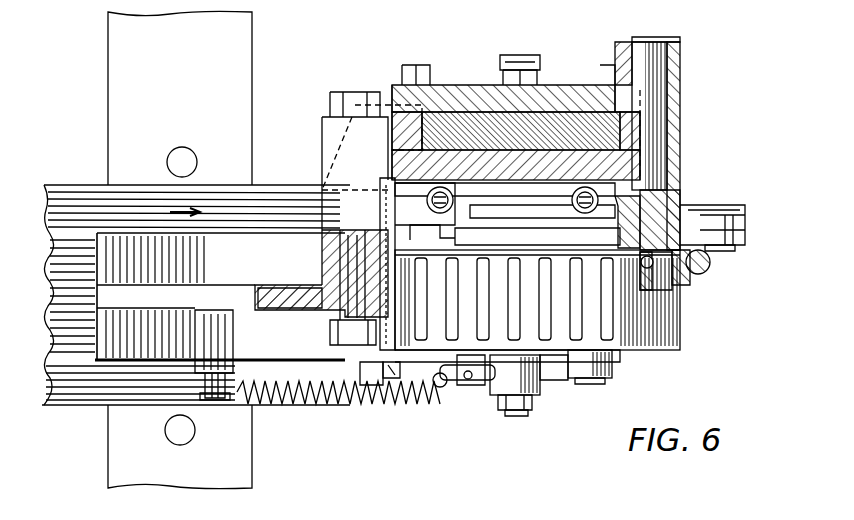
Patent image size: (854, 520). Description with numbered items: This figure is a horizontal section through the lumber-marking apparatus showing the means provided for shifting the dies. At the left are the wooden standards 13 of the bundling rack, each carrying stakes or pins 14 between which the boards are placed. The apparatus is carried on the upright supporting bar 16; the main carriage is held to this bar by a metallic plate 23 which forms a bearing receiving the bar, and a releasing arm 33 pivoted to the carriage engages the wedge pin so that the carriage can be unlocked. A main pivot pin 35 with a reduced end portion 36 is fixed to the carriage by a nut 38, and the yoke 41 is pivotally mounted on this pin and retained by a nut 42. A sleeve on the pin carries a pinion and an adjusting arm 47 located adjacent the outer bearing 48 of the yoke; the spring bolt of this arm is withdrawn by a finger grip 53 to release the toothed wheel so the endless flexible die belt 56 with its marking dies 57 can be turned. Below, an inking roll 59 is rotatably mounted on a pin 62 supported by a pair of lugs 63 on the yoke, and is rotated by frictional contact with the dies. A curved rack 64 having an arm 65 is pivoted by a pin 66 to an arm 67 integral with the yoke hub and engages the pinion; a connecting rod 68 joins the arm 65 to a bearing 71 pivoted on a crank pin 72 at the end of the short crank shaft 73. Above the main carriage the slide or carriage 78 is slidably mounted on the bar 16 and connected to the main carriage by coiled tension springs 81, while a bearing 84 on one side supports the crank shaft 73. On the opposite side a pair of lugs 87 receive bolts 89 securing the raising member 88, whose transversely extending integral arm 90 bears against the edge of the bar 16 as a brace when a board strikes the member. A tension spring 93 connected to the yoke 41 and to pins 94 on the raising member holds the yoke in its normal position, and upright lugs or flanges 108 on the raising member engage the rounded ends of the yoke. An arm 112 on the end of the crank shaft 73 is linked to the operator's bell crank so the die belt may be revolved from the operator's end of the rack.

The wooden standards 13 is at (140, 72).
The stakes or pins 14 is at (176, 150).
The upright supporting bar 16 is at (556, 130).
The metallic plate 23 is at (550, 95).
The releasing arm 33 is at (485, 195).
The main pivot pin 35 is at (524, 418).
The reduced end portion 36 is at (510, 55).
The nut 38 is at (520, 72).
The yoke 41 is at (412, 226).
The nut 42 is at (505, 412).
The adjusting arm 47 is at (466, 360).
The outer bearing 48 is at (546, 378).
The finger grip 53 is at (440, 388).
The endless flexible die belt 56 is at (575, 352).
The marking dies 57 is at (372, 386).
The inking roll 59 is at (655, 330).
The pin 62 is at (598, 384).
The lugs 63 is at (623, 363).
The rack 64 is at (473, 240).
The arm 65 is at (745, 240).
The pin 66 is at (724, 251).
The arm 67 is at (742, 208).
The connecting rod 68 is at (710, 262).
The bearing 71 is at (694, 275).
The crank pin 72 is at (673, 293).
The crank shaft 73 is at (650, 108).
The slide or carriage 78 is at (548, 160).
The coiled tension springs 81 is at (440, 188).
The bearing 84 is at (680, 128).
The lugs 87 is at (360, 152).
The raising member 88 is at (130, 332).
The bolts 89 is at (350, 92).
The transversely extending integral arm 90 is at (342, 138).
The tension spring 93 is at (300, 405).
The pins 94 is at (213, 402).
The upright lugs or flanges 108 is at (382, 370).
The arm 112 is at (682, 58).